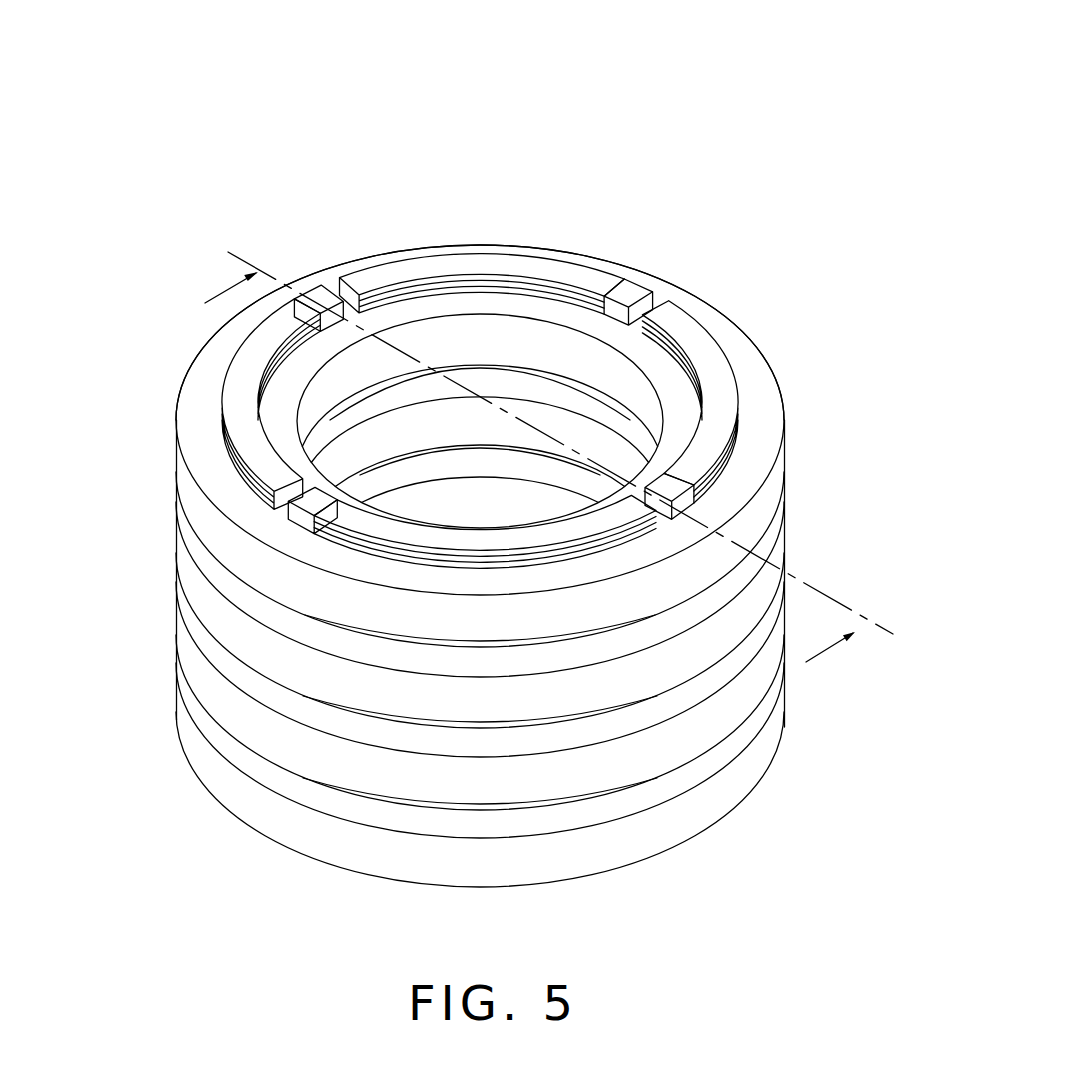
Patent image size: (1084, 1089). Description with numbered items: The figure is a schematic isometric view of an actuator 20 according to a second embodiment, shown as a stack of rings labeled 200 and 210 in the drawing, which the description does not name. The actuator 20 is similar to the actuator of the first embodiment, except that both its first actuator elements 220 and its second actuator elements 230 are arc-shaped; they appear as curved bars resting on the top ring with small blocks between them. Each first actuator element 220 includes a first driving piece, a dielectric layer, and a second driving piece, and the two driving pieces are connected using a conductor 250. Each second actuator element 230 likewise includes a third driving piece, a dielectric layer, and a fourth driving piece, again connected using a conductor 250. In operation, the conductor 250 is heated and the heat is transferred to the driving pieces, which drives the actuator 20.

The actuator 20 is at (469, 83).
The spacer assembly 200 is at (201, 396).
The ring 210 is at (762, 502).
The first actuator element 220 is at (713, 363).
The second actuator element 230 is at (538, 256).
The conductor 250 is at (644, 277).